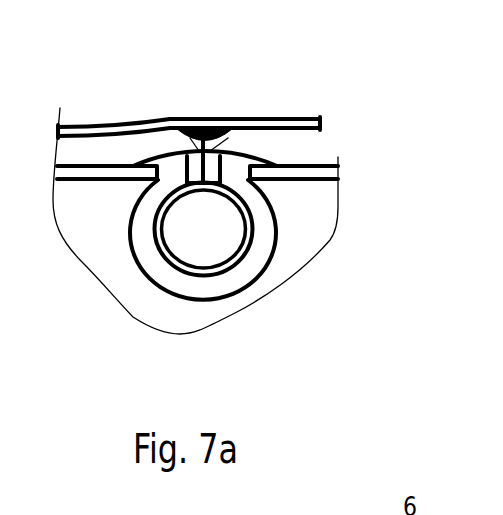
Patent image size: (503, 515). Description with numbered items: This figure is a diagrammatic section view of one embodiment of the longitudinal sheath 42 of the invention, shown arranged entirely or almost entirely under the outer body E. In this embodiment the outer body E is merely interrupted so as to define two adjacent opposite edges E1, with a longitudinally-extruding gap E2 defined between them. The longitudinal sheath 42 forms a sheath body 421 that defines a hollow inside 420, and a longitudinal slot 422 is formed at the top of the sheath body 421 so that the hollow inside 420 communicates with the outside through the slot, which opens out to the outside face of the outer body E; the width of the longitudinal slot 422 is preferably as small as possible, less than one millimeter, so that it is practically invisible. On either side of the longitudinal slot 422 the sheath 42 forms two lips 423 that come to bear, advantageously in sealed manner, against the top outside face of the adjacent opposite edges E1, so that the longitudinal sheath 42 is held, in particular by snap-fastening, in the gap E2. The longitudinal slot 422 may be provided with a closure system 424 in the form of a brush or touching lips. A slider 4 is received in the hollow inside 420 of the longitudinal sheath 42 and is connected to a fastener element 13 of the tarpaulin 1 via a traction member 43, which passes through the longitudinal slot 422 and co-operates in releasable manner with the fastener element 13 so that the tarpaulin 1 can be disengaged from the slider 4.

The tarpaulin 1 is at (118, 128).
The slider 4 is at (218, 233).
The fastener element 13 is at (203, 136).
The longitudinal sheath 42 is at (150, 183).
The traction member 43 is at (245, 130).
The hollow inside 420 is at (256, 228).
The sheath body 421 is at (247, 263).
The longitudinal slot 422 is at (210, 183).
The lips 423 is at (230, 152).
The closure system 424 is at (180, 128).
The outer body E is at (103, 177).
The adjacent opposite edges E1 is at (156, 151).
The longitudinally-extruding gap E2 is at (140, 253).